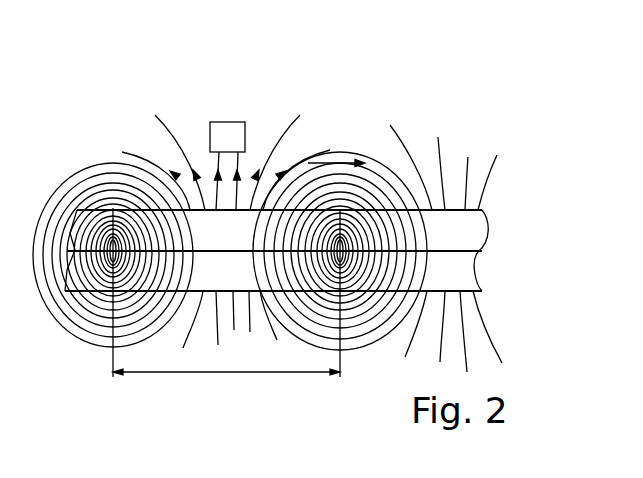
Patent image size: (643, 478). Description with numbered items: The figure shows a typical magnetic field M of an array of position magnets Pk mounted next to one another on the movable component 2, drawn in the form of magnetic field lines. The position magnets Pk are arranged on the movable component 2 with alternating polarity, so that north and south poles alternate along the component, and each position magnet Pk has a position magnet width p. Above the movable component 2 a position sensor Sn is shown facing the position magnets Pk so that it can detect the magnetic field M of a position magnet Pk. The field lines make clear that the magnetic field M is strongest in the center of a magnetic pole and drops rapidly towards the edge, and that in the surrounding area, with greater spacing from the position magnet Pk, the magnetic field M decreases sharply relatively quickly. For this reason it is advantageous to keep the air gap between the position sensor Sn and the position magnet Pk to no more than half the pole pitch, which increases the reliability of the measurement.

The movable component 2 is at (477, 278).
The magnetic field M is at (458, 98).
The position sensor Sn is at (222, 142).
The position magnet width p is at (226, 359).
The position magnet Pk is at (226, 292).